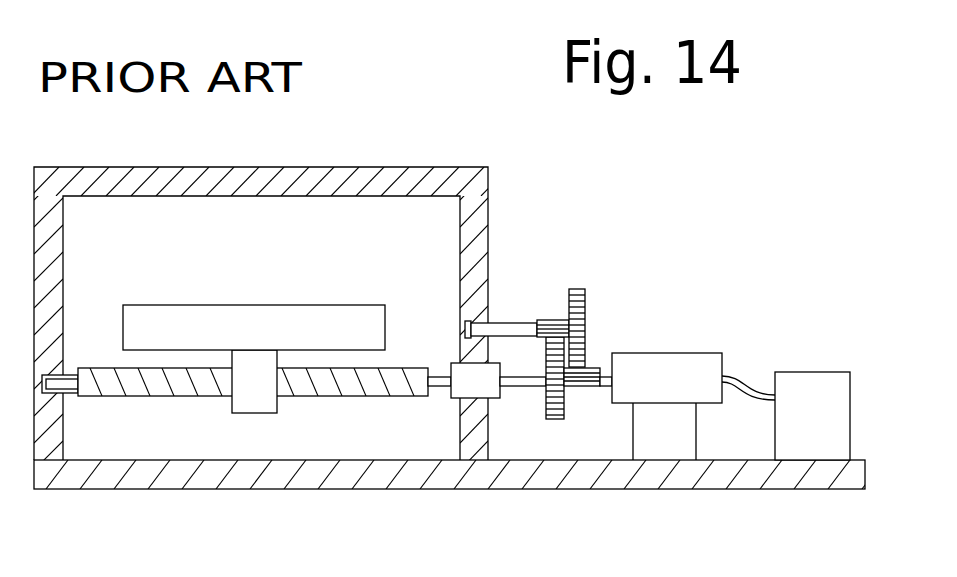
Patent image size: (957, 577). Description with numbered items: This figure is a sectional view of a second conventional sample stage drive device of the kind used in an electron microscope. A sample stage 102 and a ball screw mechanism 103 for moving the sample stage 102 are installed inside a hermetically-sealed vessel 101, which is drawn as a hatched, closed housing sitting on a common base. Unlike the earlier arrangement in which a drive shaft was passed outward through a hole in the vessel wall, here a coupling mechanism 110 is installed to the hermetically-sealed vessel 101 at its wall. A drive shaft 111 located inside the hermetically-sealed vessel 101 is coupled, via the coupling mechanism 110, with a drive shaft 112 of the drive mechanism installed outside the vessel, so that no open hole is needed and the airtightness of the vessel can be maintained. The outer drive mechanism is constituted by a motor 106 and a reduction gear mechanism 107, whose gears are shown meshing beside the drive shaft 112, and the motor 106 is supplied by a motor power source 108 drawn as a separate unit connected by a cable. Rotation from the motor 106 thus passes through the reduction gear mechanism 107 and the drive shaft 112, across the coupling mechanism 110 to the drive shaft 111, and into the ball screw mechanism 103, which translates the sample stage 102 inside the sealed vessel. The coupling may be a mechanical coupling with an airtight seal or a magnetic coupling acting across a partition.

The hermetically-sealed vessel 101 is at (478, 188).
The sample stage 102 is at (310, 317).
The ball screw mechanism 103 is at (292, 406).
The motor 106 is at (675, 358).
The reduction gear mechanism 107 is at (585, 312).
The motor power source 108 is at (804, 378).
The coupling mechanism 110 is at (472, 390).
The drive shaft 111 is at (442, 390).
The drive shaft 112 is at (520, 384).